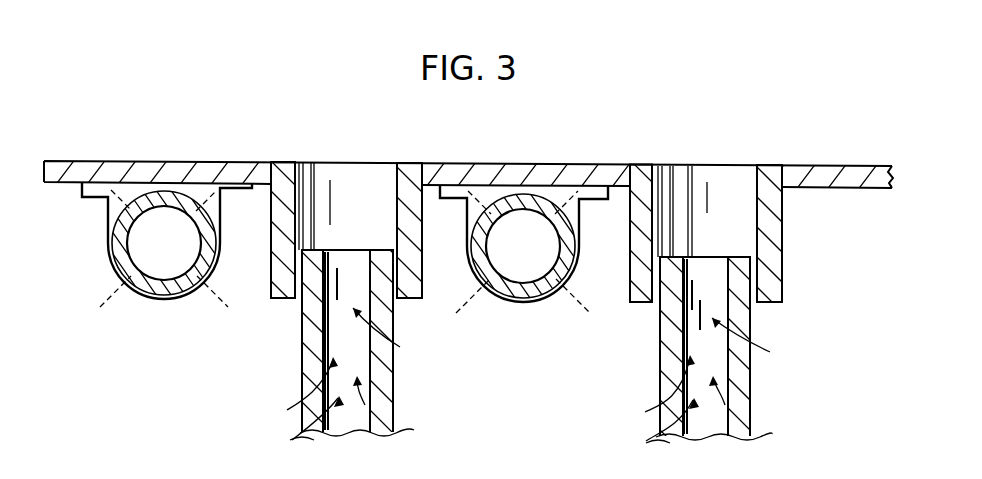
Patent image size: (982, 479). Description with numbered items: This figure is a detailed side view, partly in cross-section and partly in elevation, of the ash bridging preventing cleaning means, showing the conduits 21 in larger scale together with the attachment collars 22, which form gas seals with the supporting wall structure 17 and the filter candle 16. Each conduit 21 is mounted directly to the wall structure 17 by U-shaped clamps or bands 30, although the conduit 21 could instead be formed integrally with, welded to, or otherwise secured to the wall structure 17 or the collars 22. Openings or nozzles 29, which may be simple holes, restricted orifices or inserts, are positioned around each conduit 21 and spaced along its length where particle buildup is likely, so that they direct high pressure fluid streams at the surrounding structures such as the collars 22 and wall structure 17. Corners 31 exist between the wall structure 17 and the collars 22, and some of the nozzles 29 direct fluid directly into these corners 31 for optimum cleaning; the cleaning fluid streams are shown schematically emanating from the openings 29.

The filter candle 16 is at (402, 392).
The supporting wall structure 17 is at (855, 184).
The conduit 21 is at (178, 300).
The attachment collar 22 is at (418, 272).
The openings or nozzles 29 is at (112, 218).
The U-shaped clamps or bands 30 is at (106, 198).
The corners 31 is at (266, 188).